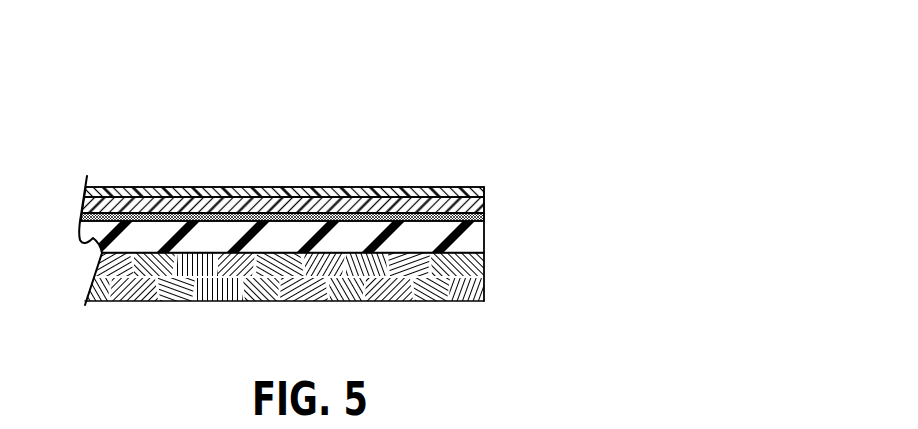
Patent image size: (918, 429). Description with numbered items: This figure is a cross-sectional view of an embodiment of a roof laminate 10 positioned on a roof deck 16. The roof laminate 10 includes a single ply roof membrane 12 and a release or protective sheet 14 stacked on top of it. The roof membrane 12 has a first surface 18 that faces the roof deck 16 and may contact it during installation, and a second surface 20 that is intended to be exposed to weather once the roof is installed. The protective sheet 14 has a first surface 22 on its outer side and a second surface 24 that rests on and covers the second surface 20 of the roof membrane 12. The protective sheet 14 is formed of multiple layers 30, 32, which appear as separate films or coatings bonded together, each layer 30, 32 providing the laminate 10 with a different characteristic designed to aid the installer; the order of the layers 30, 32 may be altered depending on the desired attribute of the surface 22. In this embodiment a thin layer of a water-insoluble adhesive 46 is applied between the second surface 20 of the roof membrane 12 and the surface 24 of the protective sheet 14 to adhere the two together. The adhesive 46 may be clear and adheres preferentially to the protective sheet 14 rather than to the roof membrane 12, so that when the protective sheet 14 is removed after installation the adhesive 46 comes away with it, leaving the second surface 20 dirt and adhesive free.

The roof laminate 10 is at (534, 130).
The roof membrane 12 is at (489, 239).
The protective sheet 14 is at (446, 185).
The roof deck 16 is at (489, 281).
The first surface 18 is at (413, 253).
The second surface 20 is at (353, 213).
The first surface 22 is at (265, 187).
The second surface 24 is at (283, 213).
The layer 30 is at (485, 196).
The layer 32 is at (485, 208).
The water-insoluble adhesive 46 is at (485, 219).